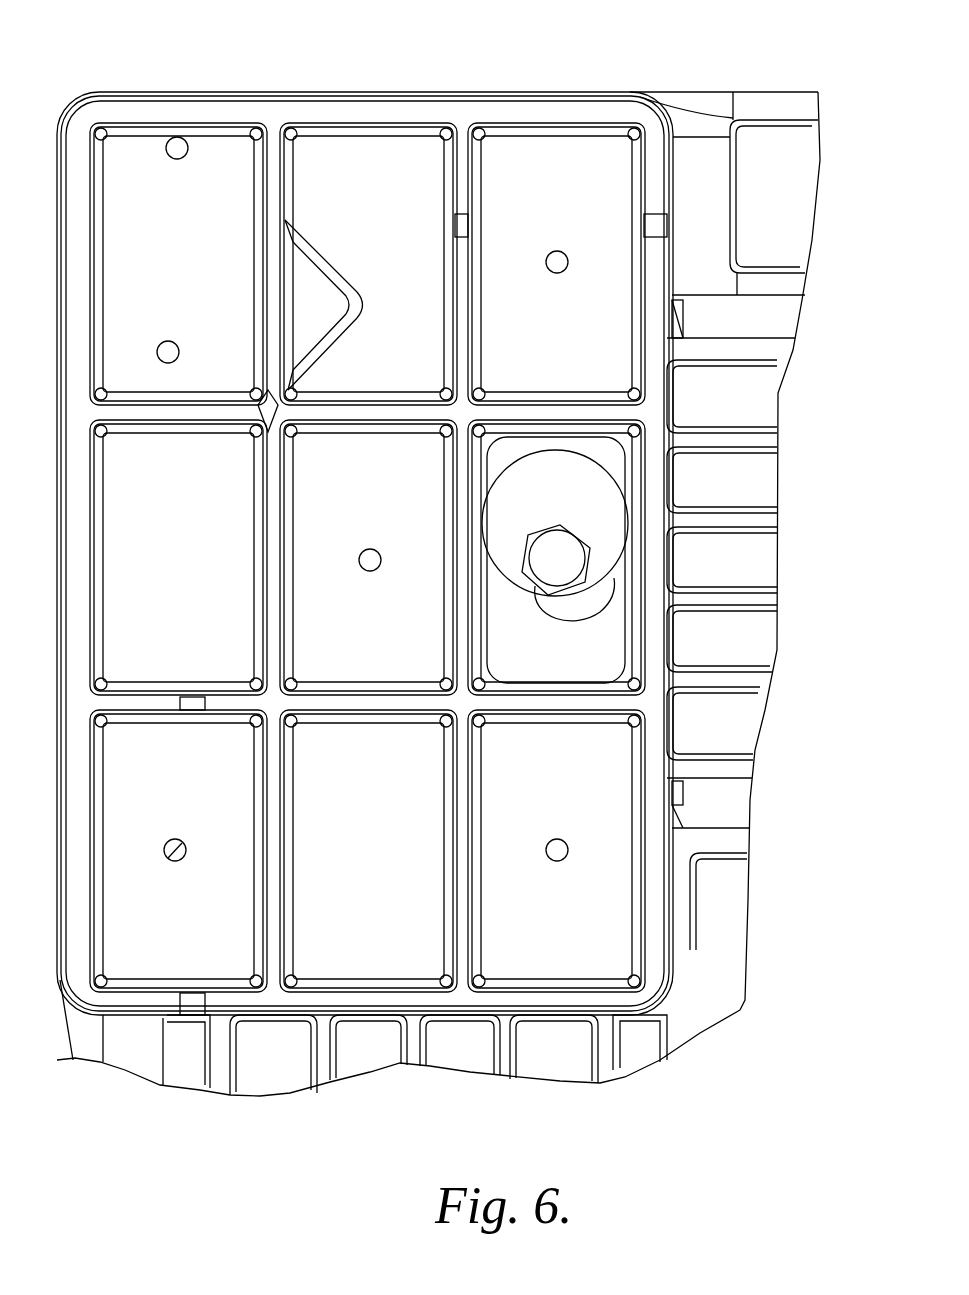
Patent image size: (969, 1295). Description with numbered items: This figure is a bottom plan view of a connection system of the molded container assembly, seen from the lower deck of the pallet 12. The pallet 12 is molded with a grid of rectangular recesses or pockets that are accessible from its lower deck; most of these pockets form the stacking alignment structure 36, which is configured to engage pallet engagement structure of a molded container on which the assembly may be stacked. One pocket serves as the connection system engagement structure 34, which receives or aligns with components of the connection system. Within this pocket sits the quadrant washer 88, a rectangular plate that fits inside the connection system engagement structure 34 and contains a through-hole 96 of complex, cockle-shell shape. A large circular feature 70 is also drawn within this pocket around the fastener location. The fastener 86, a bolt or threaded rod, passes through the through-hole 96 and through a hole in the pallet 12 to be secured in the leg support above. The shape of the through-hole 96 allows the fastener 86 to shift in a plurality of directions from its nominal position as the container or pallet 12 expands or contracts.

The pallet 12 is at (237, 78).
The connection system engagement structure 34 is at (570, 695).
The stacking alignment structure 36 is at (137, 407).
The circular recess 70 is at (555, 470).
The fastener 86 is at (543, 565).
The quadrant washer 88 is at (600, 657).
The through-hole 96 is at (620, 610).